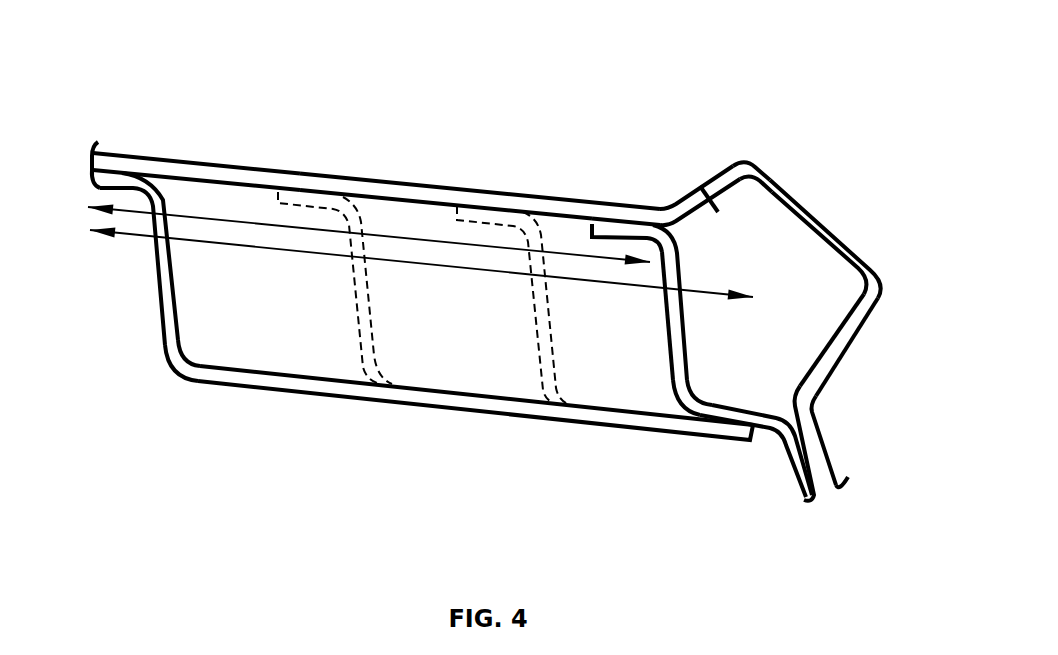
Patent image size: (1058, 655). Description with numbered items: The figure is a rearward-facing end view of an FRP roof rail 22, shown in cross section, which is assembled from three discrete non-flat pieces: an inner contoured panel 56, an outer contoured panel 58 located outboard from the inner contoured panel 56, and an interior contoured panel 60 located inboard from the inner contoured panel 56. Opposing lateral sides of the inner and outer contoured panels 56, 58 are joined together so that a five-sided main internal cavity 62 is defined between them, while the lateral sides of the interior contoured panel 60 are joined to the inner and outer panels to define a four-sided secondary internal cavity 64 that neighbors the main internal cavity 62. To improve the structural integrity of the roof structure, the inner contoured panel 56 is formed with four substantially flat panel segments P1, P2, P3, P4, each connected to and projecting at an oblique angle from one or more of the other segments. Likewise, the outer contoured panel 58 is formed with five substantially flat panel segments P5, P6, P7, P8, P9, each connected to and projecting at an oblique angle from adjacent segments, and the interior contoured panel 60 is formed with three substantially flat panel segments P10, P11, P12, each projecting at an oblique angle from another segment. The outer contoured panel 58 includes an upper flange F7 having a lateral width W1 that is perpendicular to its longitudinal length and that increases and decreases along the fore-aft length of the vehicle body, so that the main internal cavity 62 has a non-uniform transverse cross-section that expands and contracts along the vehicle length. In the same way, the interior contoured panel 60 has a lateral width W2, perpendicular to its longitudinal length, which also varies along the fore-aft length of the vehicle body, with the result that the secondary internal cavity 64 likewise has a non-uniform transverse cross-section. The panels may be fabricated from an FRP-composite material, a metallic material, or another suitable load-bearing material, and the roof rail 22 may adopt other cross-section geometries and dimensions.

The roof rail 22 is at (260, 70).
The panel segment P10 is at (125, 170).
The upper flange F7 is at (220, 167).
The panel segment P5 is at (485, 191).
The panel segment P1 is at (620, 222).
The panel segment P6 is at (718, 174).
The main internal cavity 62 is at (703, 190).
The outer contoured panel 58 is at (747, 163).
The panel segment P7 is at (810, 195).
The panel segment P8 is at (836, 367).
The panel segment P9 is at (840, 465).
The panel segment P4 is at (797, 476).
The panel segment P3 is at (727, 421).
The panel segment P2 is at (667, 353).
The inner contoured panel 56 is at (680, 407).
The panel segment P11 is at (158, 300).
The interior contoured panel 60 is at (180, 377).
The panel segment P12 is at (361, 398).
The secondary internal cavity 64 is at (387, 200).
The lateral flange width W1 is at (213, 220).
The lateral rail width W2 is at (290, 250).